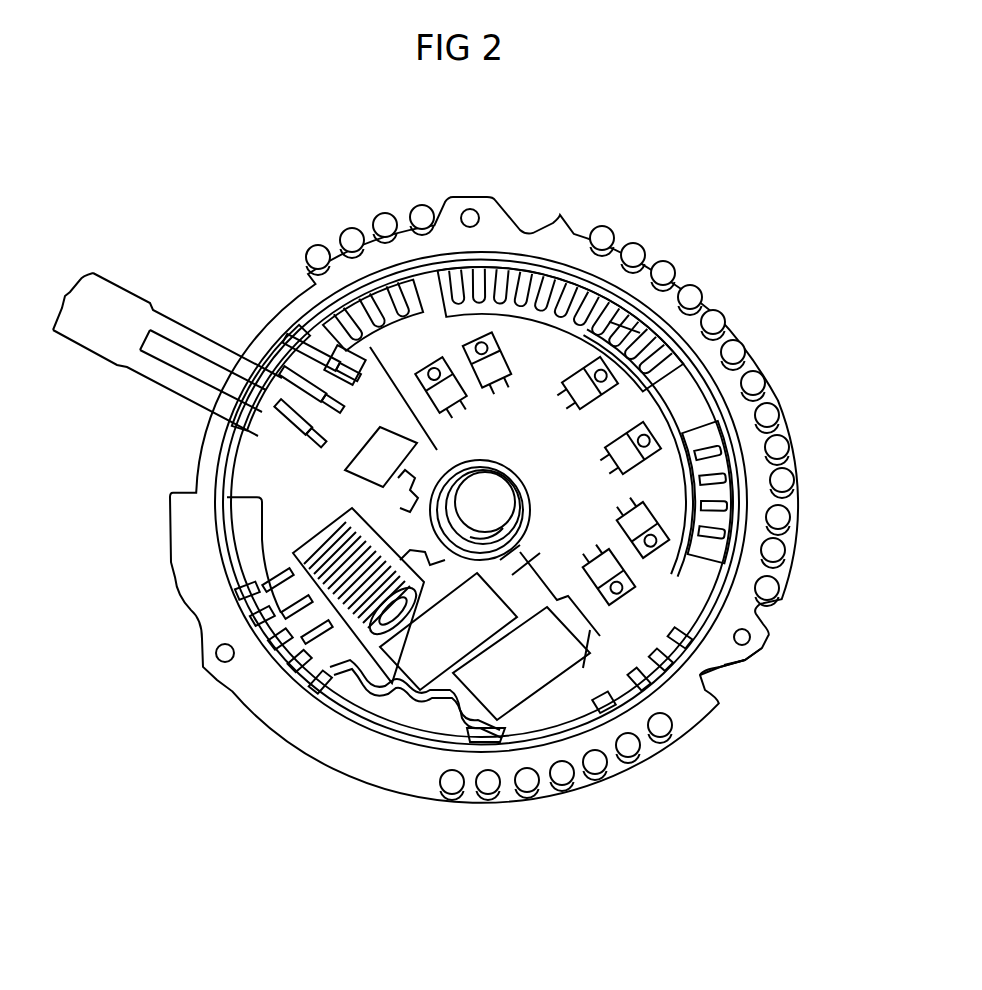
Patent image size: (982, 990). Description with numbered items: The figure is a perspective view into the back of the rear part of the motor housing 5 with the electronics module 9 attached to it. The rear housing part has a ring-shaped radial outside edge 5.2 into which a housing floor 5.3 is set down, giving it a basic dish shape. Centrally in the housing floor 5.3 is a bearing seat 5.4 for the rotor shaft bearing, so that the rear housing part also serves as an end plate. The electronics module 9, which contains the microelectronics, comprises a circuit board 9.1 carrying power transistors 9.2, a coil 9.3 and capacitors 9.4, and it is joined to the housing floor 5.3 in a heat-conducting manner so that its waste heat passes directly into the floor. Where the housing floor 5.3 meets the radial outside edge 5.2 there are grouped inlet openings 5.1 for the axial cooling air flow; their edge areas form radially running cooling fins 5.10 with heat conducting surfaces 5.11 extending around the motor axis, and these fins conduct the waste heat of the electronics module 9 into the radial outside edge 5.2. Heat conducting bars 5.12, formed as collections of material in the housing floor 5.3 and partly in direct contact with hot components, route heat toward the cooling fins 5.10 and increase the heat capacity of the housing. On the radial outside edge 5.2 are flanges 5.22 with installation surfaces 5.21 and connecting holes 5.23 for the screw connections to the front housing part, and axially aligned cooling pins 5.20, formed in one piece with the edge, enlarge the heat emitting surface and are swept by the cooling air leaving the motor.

The rear part of the motor housing 5 is at (750, 266).
The inlet openings 5.1 is at (652, 333).
The radial outside edge 5.2 is at (569, 232).
The housing floor 5.3 is at (273, 470).
The bearing seat 5.4 is at (494, 540).
The cooling fins 5.10 is at (338, 636).
The heat conducting surfaces 5.11 is at (253, 612).
The heat conducting bars 5.12 is at (330, 650).
The cooling pins 5.20 is at (658, 740).
The installation surfaces 5.21 is at (737, 657).
The flanges 5.22 is at (764, 645).
The connecting holes 5.23 is at (750, 637).
The electronics module 9 is at (586, 672).
The circuit board 9.1 is at (667, 569).
The power transistors 9.2 is at (654, 444).
The coil 9.3 is at (313, 540).
The capacitors 9.4 is at (478, 688).